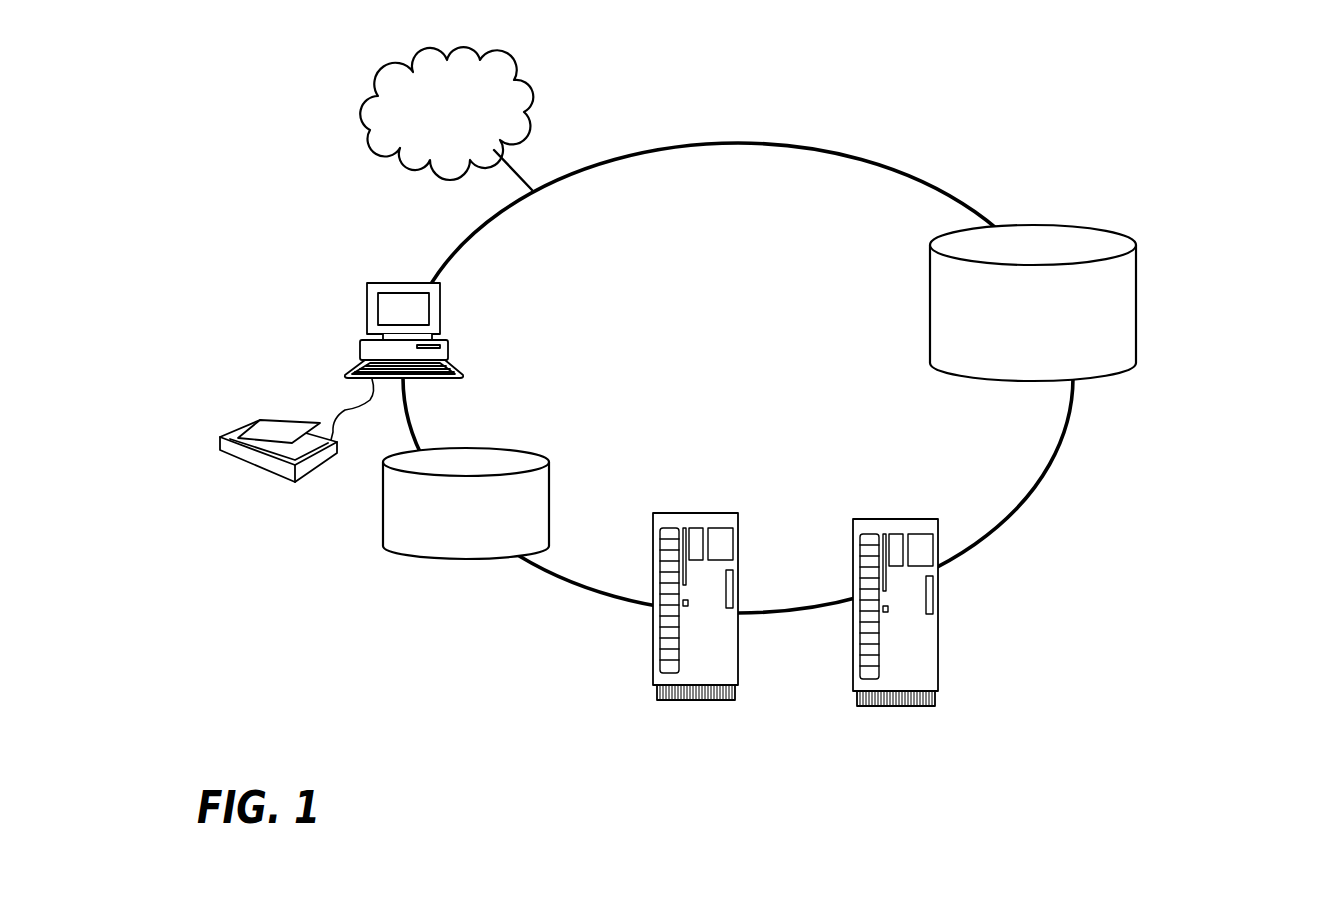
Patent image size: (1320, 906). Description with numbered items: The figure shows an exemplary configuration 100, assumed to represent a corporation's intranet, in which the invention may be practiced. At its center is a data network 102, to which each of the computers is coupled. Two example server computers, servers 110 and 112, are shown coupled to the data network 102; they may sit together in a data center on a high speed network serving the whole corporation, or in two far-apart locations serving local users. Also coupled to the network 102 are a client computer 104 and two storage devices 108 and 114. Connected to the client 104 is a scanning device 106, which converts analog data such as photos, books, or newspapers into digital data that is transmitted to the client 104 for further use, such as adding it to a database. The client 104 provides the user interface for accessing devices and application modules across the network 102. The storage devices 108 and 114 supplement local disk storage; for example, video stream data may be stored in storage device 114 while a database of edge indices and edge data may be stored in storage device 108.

The configuration 100 is at (1268, 57).
The data network 102 is at (887, 122).
The client computer 104 is at (367, 312).
The scanning device 106 is at (272, 478).
The storage device 108 is at (515, 558).
The server 110 is at (653, 632).
The server 112 is at (853, 640).
The storage device 114 is at (1140, 318).